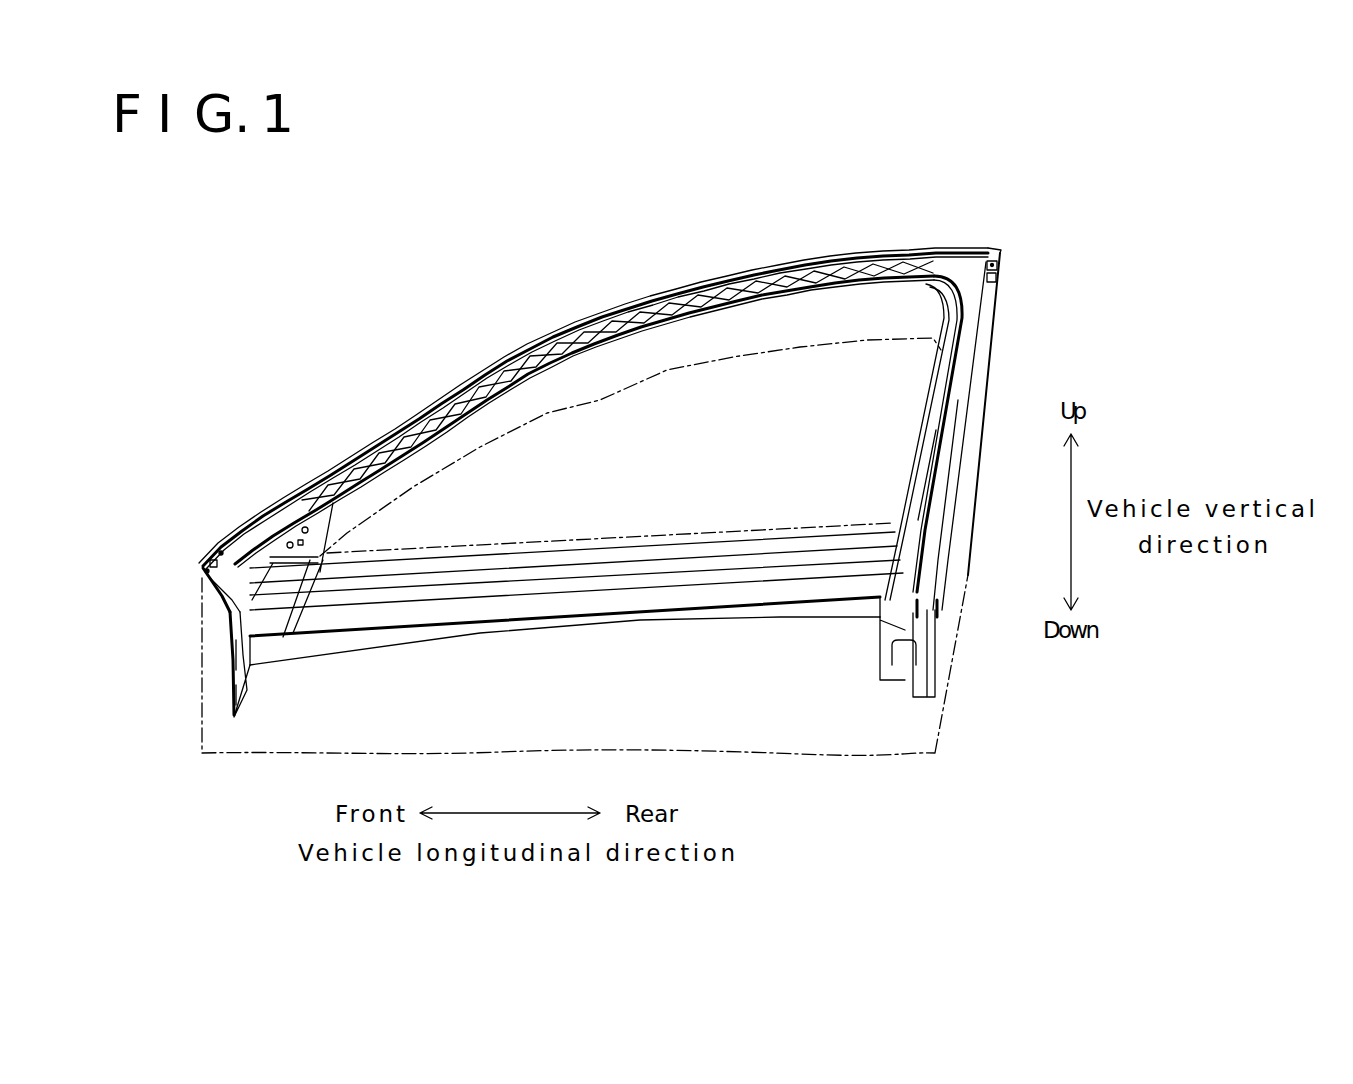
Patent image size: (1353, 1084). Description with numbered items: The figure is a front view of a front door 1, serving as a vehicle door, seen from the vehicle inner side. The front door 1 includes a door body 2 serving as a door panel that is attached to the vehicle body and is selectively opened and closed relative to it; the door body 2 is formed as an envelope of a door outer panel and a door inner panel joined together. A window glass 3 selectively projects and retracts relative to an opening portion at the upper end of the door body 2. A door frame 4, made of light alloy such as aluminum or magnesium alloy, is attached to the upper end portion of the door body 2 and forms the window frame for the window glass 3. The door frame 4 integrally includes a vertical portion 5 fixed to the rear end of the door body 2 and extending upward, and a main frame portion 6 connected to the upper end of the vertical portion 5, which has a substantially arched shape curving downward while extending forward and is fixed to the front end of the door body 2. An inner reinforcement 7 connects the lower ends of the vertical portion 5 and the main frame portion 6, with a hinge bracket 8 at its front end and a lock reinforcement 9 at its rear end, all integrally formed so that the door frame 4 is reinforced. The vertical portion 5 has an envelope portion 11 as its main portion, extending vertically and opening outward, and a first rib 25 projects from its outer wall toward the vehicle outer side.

The front door 1 is at (289, 280).
The door body 2 is at (200, 612).
The window glass 3 is at (443, 483).
The door frame 4 is at (1009, 251).
The vertical portion 5 is at (995, 341).
The main frame portion 6 is at (614, 309).
The inner reinforcement 7 is at (561, 607).
The hinge bracket 8 is at (236, 697).
The lock reinforcement 9 is at (922, 650).
The envelope portion 11 is at (933, 453).
The first rib 25 is at (918, 516).